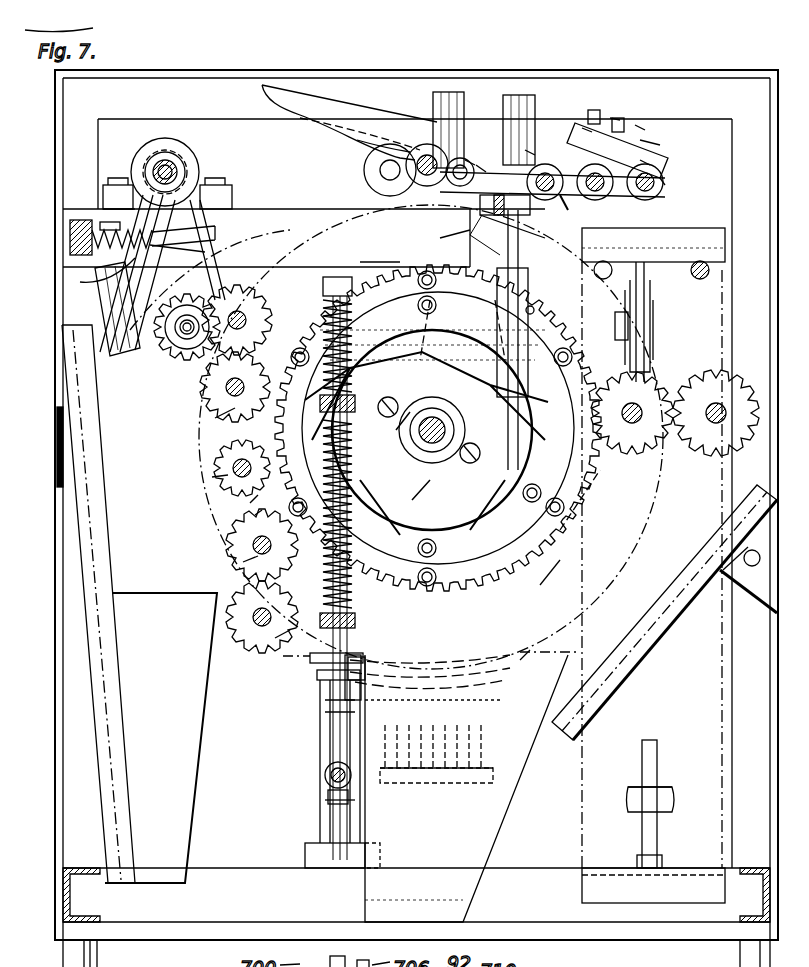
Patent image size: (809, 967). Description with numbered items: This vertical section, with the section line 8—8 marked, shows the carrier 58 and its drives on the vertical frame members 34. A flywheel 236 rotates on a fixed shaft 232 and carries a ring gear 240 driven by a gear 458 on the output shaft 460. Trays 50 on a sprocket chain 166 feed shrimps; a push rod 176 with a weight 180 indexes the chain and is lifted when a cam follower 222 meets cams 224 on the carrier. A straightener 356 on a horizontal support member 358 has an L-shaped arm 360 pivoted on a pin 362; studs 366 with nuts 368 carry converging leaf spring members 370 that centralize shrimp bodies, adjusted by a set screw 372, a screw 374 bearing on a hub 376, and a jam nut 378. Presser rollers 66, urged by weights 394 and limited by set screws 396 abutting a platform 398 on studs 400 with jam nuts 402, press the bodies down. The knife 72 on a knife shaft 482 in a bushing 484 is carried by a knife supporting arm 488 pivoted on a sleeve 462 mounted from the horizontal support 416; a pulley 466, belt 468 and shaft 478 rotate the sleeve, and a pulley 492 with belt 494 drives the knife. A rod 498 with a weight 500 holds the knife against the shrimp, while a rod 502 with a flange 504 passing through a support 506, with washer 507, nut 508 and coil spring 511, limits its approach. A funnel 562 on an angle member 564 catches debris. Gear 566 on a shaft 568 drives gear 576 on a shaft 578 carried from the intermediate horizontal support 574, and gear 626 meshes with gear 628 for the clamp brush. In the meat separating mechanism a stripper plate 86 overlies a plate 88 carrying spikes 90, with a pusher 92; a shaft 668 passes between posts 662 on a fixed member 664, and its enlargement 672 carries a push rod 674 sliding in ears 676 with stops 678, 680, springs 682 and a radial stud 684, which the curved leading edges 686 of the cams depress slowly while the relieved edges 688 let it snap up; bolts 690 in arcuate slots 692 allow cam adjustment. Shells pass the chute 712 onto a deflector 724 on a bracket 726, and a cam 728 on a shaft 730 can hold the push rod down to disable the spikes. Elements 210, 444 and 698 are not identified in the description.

The section line 8- 8 is at (539, 666).
The vertical frame member 34 is at (748, 868).
The tray 50 is at (712, 228).
The carrier 58 is at (640, 480).
The presser roller 66 is at (400, 196).
The knife 72 is at (175, 352).
The stripper plate 86 is at (490, 690).
The spike carrying plate 88 is at (492, 783).
The spike 90 is at (482, 748).
The pusher 92 is at (530, 650).
The sprocket chain 166 is at (672, 228).
The push rod 176 is at (441, 238).
The weight 180 is at (548, 300).
The arcuate plate 210 is at (495, 665).
The cam follower 222 is at (622, 318).
The cam 224 is at (442, 330).
The fixed shaft 232 is at (442, 424).
The flywheel 236 is at (478, 578).
The ring gear 240 is at (551, 573).
The straightener 356 is at (660, 126).
The horizontal support member 358 is at (530, 150).
The L-shaped arm 360 is at (640, 125).
The pin 362 is at (662, 175).
The stud 366 is at (588, 130).
The nut 368 is at (615, 118).
The leaf spring member 370 is at (545, 250).
The set screw 372 is at (660, 148).
The screw 374 is at (600, 196).
The hub 376 is at (560, 200).
The jam nut 378 is at (640, 120).
The weight 394 is at (517, 95).
The set screw 396 is at (580, 180).
The platform 398 is at (552, 180).
The stud 400 is at (535, 220).
The jam nut 402 is at (555, 180).
The horizontal support 416 is at (232, 200).
The block 444 is at (115, 178).
The gear 458 is at (212, 477).
The output shaft 460 is at (232, 462).
The sleeve 462 is at (172, 160).
The pulley 466 is at (150, 160).
The belt 468 is at (250, 205).
The shaft 478 is at (225, 395).
The knife shaft 482 is at (167, 345).
The bushing 484 is at (215, 418).
The knife supporting arm 488 is at (205, 175).
The pulley 492 is at (270, 285).
The belt 494 is at (205, 252).
The rod 498 is at (117, 309).
The weight 500 is at (165, 335).
The rod 502 is at (160, 255).
The flange 504 is at (200, 236).
The support 506 is at (78, 215).
The washer 507 is at (113, 215).
The nut 508 is at (70, 235).
The coil spring 511 is at (80, 282).
The chute or funnel 562 is at (161, 738).
The angle member 564 is at (108, 622).
The gear 566 is at (248, 540).
The shaft 568 is at (243, 562).
The intermediate horizontal support 574 is at (518, 925).
The gear 576 is at (275, 638).
The shaft 578 is at (248, 614).
The gear 626 is at (706, 395).
The gear 628 is at (660, 383).
The upstanding post 662 is at (345, 825).
The fixed member 664 is at (305, 852).
The shaft 668 is at (325, 774).
The enlargement 672 is at (330, 760).
The push rod 674 is at (313, 672).
The ear 676 is at (268, 432).
The stop 678 is at (385, 249).
The stop 680 is at (255, 515).
The spring 682 is at (352, 300).
The radial stud 684 is at (250, 503).
The curved leading edge 686 is at (598, 486).
The disc 688 is at (505, 518).
The bolt 690 is at (650, 455).
The arcuate slot 692 is at (430, 467).
The arm 698 is at (584, 508).
The funnel or chute 712 is at (500, 805).
The deflector 724 is at (655, 648).
The bracket 726 is at (750, 605).
The cam 728 is at (315, 120).
The shaft 730 is at (360, 134).